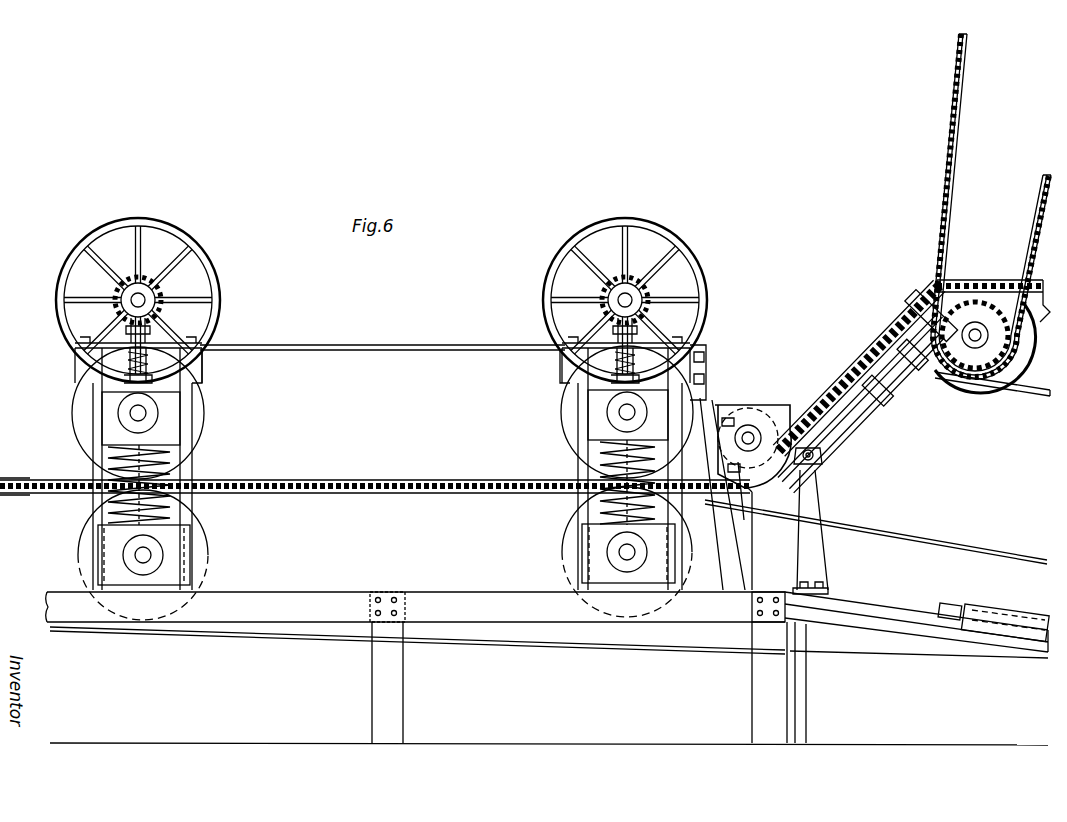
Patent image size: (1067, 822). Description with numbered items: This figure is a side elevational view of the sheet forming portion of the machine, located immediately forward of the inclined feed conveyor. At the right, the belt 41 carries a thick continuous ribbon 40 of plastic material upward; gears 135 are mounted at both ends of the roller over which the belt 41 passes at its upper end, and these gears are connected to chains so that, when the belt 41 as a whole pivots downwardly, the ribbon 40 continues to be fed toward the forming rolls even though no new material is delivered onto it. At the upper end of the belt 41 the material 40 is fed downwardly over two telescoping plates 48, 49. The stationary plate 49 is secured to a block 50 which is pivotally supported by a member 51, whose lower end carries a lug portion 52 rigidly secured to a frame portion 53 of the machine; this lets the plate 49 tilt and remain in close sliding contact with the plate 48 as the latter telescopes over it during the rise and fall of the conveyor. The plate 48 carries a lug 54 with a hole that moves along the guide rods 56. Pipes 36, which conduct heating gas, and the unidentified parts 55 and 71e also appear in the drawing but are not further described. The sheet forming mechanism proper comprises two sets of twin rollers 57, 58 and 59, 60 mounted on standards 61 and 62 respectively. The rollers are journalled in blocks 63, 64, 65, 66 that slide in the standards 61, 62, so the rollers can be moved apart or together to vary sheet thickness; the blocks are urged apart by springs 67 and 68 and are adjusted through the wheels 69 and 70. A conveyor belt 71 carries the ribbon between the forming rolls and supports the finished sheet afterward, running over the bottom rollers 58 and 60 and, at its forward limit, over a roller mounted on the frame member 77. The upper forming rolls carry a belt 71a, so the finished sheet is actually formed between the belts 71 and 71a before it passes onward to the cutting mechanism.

The pipes 36 is at (964, 150).
The thick continuous ribbon 40 is at (985, 292).
The belt 41 is at (1045, 398).
The telescoping plate 48 is at (816, 410).
The stationary plate 49 is at (848, 414).
The block 50 is at (815, 456).
The member 51 is at (822, 548).
The lug portion 52 is at (830, 590).
The frame portion 53 is at (880, 614).
The lug 54 is at (918, 356).
The channel member 55 is at (872, 378).
The guide rods 56 is at (838, 428).
The upper forming roller 57 is at (563, 410).
The bottom forming roller 58 is at (566, 541).
The upper forming roller 59 is at (201, 420).
The bottom forming roller 60 is at (205, 557).
The standard 61 is at (582, 457).
The standard 62 is at (196, 466).
The block 63 is at (580, 398).
The block 64 is at (599, 554).
The block 65 is at (172, 421).
The block 66 is at (182, 568).
The spring 67 is at (594, 498).
The spring 68 is at (160, 496).
The wheel 69 is at (592, 232).
The wheel 70 is at (197, 257).
The conveyor belt 71 is at (410, 492).
The belt 71a is at (356, 346).
The belt end 71e is at (20, 480).
The frame member 77 is at (478, 610).
The gears 135 is at (988, 356).